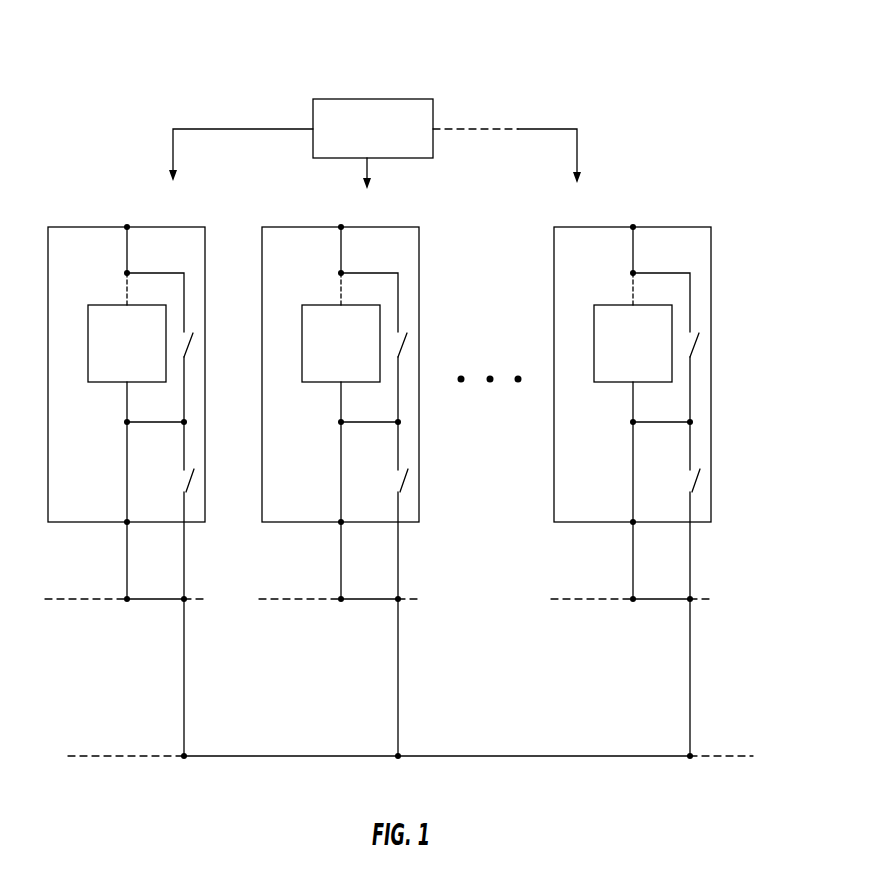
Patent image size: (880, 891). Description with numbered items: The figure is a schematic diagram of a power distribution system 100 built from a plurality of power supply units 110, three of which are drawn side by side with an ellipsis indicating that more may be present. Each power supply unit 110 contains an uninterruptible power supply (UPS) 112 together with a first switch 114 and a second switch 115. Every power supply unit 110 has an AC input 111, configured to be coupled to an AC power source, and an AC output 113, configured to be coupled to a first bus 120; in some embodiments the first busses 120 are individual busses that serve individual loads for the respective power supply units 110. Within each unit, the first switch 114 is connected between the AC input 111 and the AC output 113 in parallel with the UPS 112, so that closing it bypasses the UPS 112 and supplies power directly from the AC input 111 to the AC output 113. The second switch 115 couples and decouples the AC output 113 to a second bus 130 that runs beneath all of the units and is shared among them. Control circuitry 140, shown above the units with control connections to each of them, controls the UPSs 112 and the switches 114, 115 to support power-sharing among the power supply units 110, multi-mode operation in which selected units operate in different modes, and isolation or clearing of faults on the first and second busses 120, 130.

The power distribution system 100 is at (607, 83).
The power supply unit 110 is at (108, 227).
The AC input 111 is at (125, 230).
The uninterruptible power supply 112 is at (110, 385).
The AC output 113 is at (125, 521).
The first switch 114 is at (177, 311).
The second switch 115 is at (178, 480).
The first bus 120 is at (105, 600).
The second bus 130 is at (287, 757).
The control circuitry 140 is at (387, 99).